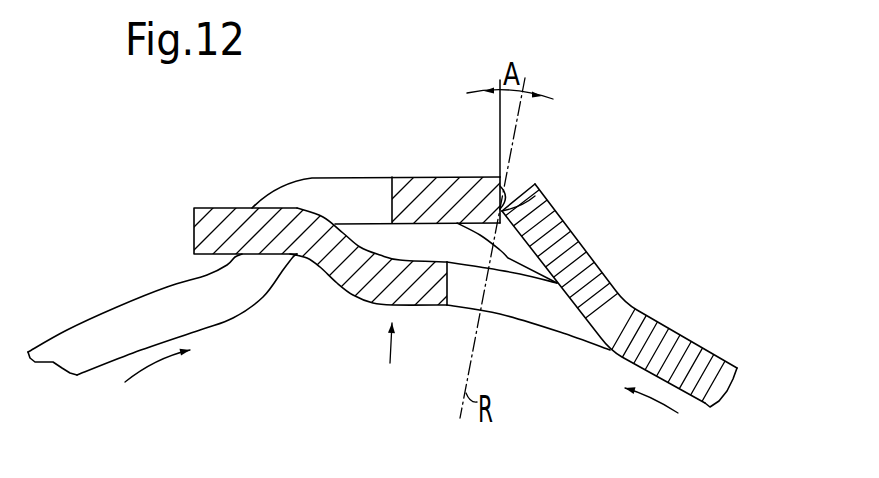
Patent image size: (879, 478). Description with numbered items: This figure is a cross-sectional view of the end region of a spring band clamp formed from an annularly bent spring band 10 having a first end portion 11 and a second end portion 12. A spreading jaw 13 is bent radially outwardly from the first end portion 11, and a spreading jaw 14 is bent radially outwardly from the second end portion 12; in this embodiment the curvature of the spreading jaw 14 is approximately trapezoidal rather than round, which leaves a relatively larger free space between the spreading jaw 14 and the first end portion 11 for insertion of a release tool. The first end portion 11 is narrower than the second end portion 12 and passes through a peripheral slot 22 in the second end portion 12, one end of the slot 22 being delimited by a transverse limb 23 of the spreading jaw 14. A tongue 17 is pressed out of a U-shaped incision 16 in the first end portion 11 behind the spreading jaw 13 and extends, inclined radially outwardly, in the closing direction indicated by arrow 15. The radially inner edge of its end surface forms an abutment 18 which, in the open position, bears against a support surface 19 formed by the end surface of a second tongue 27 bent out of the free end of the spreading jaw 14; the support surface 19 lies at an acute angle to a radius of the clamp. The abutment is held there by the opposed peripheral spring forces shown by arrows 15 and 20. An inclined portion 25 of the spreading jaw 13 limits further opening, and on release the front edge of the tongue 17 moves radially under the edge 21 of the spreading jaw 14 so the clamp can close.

The spring band 10 is at (386, 367).
The first end portion 11 is at (457, 308).
The second end portion 12 is at (118, 302).
The spreading jaw 13 is at (230, 205).
The spreading jaw 14 is at (370, 177).
The arrow indicating closing direction 15 is at (660, 407).
The U-shaped incision 16 is at (553, 313).
The tongue 17 is at (587, 250).
The abutment 18 is at (533, 200).
The support surface 19 is at (502, 185).
The arrow indicating opposite peripheral direction 20 is at (152, 370).
The edge of spreading jaw 21 is at (506, 275).
The peripheral slot 22 is at (170, 302).
The transverse limb 23 is at (410, 195).
The inclined portion 25 is at (330, 252).
The second tongue 27 is at (485, 172).